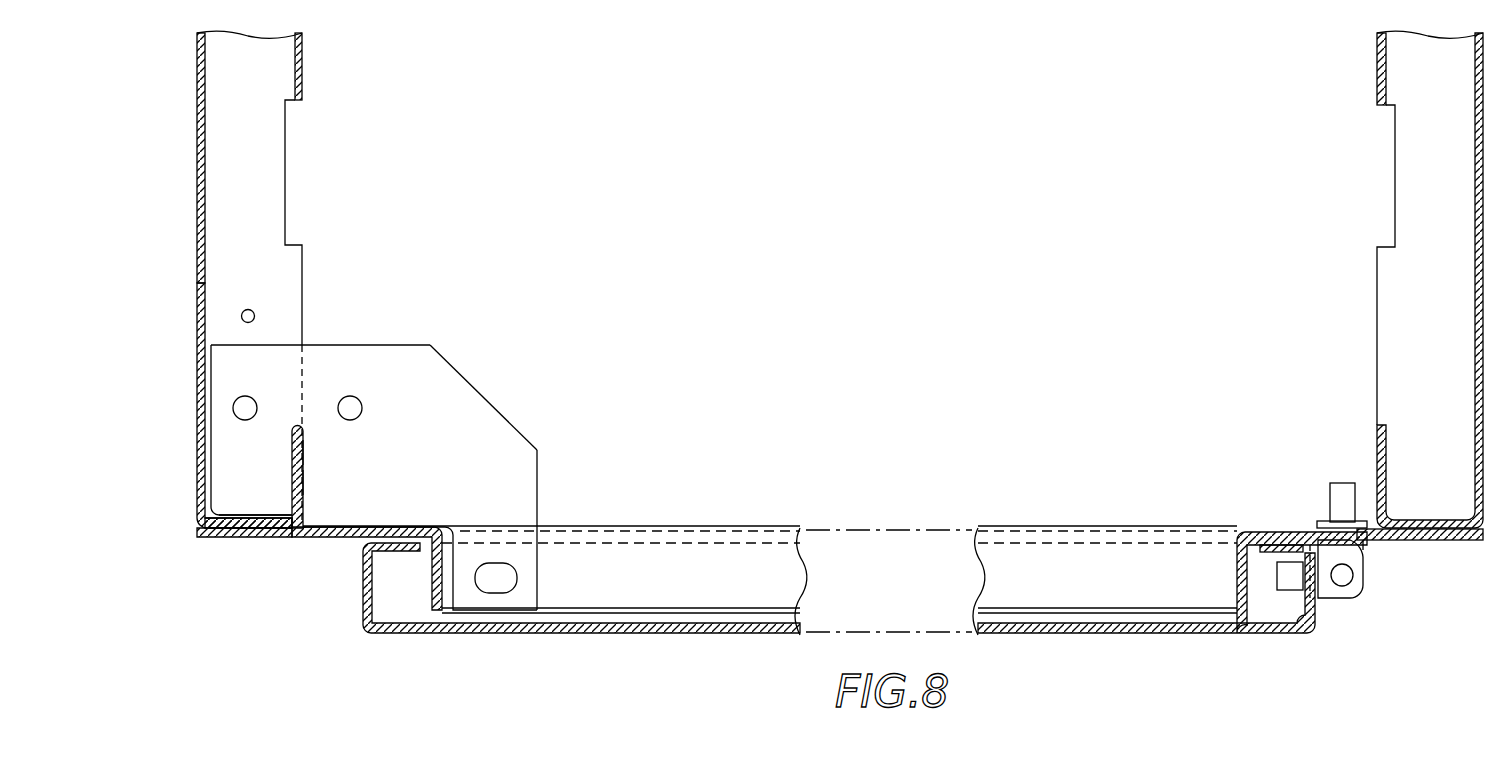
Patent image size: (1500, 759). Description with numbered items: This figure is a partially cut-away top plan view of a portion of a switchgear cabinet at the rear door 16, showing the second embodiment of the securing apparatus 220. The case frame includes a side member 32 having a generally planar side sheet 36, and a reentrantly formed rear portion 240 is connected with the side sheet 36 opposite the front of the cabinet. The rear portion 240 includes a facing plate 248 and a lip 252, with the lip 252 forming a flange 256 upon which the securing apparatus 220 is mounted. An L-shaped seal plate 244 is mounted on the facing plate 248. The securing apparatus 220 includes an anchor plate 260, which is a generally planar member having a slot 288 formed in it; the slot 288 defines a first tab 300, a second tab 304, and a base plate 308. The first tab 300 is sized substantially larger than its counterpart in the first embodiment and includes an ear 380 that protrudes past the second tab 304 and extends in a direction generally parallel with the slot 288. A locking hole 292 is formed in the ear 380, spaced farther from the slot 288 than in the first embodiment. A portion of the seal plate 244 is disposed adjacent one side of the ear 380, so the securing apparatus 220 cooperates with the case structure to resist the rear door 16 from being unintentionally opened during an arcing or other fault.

The rear door 16 is at (865, 607).
The side member 32 is at (200, 258).
The side sheet 36 is at (198, 380).
The securing apparatus 220 is at (452, 352).
The rear portion 240 is at (262, 512).
The seal plate 244 is at (297, 538).
The facing plate 248 is at (237, 520).
The lip 252 is at (305, 456).
The flange 256 is at (305, 480).
The anchor plate 260 is at (407, 432).
The slot 288 is at (335, 448).
The locking hole 292 is at (505, 583).
The first tab 300 is at (542, 456).
The second tab 304 is at (248, 537).
The base plate 308 is at (338, 345).
The ear 380 is at (537, 548).